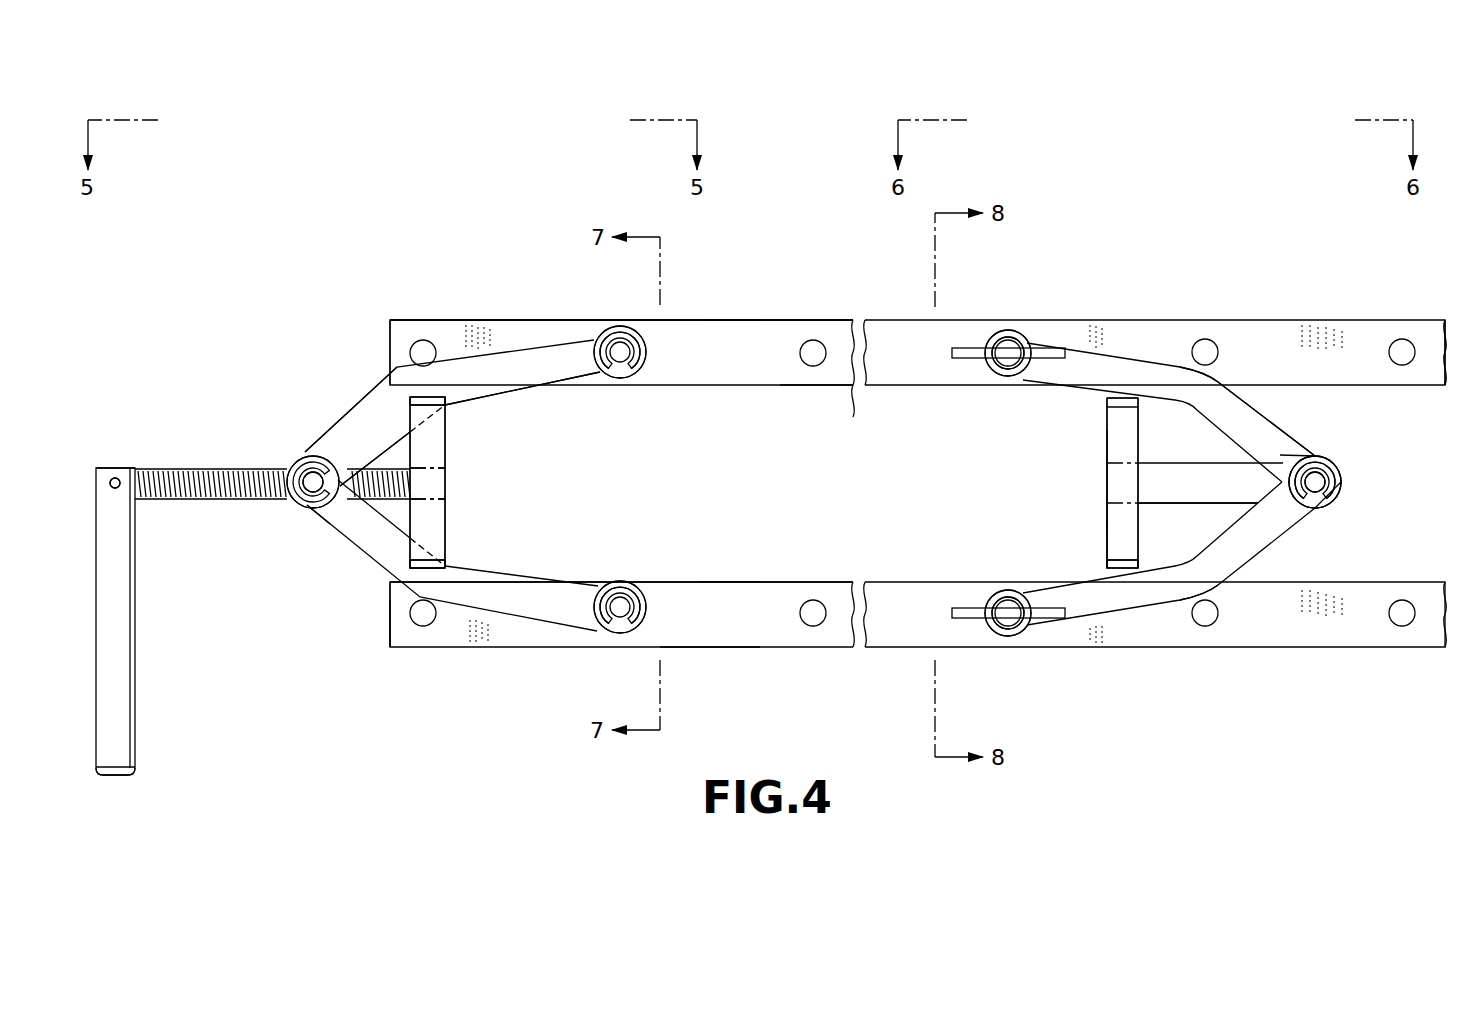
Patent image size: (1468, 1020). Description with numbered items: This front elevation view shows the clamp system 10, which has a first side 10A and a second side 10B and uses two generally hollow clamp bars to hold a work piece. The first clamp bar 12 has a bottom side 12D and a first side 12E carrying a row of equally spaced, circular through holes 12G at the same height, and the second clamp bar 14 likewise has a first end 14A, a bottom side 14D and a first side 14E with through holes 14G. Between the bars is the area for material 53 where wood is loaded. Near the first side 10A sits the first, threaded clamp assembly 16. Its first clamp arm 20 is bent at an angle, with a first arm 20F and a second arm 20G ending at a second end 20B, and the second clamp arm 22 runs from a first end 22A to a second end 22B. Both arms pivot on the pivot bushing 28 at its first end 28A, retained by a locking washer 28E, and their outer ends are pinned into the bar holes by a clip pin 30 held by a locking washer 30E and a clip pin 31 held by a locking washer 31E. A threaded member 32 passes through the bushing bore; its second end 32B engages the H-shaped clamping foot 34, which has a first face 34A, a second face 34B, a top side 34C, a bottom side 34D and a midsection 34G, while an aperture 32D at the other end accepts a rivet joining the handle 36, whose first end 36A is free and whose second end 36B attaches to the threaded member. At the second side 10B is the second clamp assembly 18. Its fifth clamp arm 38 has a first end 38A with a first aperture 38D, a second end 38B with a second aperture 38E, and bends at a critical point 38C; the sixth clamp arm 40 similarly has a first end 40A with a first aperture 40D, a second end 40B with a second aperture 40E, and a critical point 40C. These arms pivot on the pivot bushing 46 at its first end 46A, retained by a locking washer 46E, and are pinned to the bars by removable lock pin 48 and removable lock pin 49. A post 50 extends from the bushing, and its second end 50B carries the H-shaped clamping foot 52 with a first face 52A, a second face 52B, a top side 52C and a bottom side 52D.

The clamp system 10 is at (552, 157).
The first side 10A is at (286, 322).
The second side 10B is at (1351, 282).
The first clamp bar 12 is at (736, 316).
The bottom side 12D is at (816, 415).
The first side 12E is at (678, 365).
The through holes 12G is at (813, 340).
The second clamp bar 14 is at (737, 578).
The first end 14A is at (389, 633).
The bottom side 14D is at (712, 648).
The first side 14E is at (690, 625).
The through holes 14G is at (813, 602).
The first clamp assembly 16 is at (286, 614).
The second clamp assembly 18 is at (1296, 414).
The first clamp arm 20 is at (543, 357).
The second end 20B is at (611, 326).
The first arm 20F is at (343, 432).
The second arm 20G is at (522, 388).
The second clamp arm 22 is at (543, 620).
The first end 22A is at (292, 506).
The second end 22B is at (618, 635).
The pivot bushing 28 is at (309, 496).
The first end 28A is at (313, 482).
The locking washer 28E is at (300, 460).
The clip pin 30 is at (618, 365).
The locking washer 30E is at (643, 360).
The clip pin 31 is at (618, 602).
The locking washer 31E is at (642, 596).
The threaded member 32 is at (180, 465).
The second end 32B is at (430, 522).
The aperture 32D is at (112, 498).
The clamping foot 34 is at (443, 443).
The first face 34A is at (349, 428).
The second face 34B is at (448, 542).
The top side 34C is at (400, 446).
The bottom side 34D is at (410, 578).
The midsection 34G is at (443, 484).
The handle 36 is at (142, 702).
The first end 36A is at (120, 778).
The second end 36B is at (110, 468).
The fifth clamp arm 38 is at (1092, 355).
The first end 38A is at (1337, 457).
The second end 38B is at (1000, 332).
The critical point 38C is at (1222, 372).
The first aperture 38D is at (1315, 482).
The second aperture 38E is at (1031, 331).
The sixth clamp arm 40 is at (1092, 612).
The first end 40A is at (1343, 483).
The second end 40B is at (1003, 637).
The critical point 40C is at (1218, 590).
The first aperture 40D is at (1315, 455).
The second aperture 40E is at (1033, 637).
The pivot bushing 46 is at (1321, 499).
The first end 46A is at (1315, 482).
The locking washer 46E is at (1342, 495).
The removable lock pin 48 is at (1010, 365).
The removable lock pin 49 is at (1009, 604).
The post 50 is at (1194, 504).
The second end 50B is at (1150, 499).
The clamping foot 52 is at (1113, 447).
The first face 52A is at (1140, 443).
The second face 52B is at (1107, 538).
The top side 52C is at (1120, 396).
The bottom side 52D is at (1118, 572).
The area for material 53 is at (735, 452).